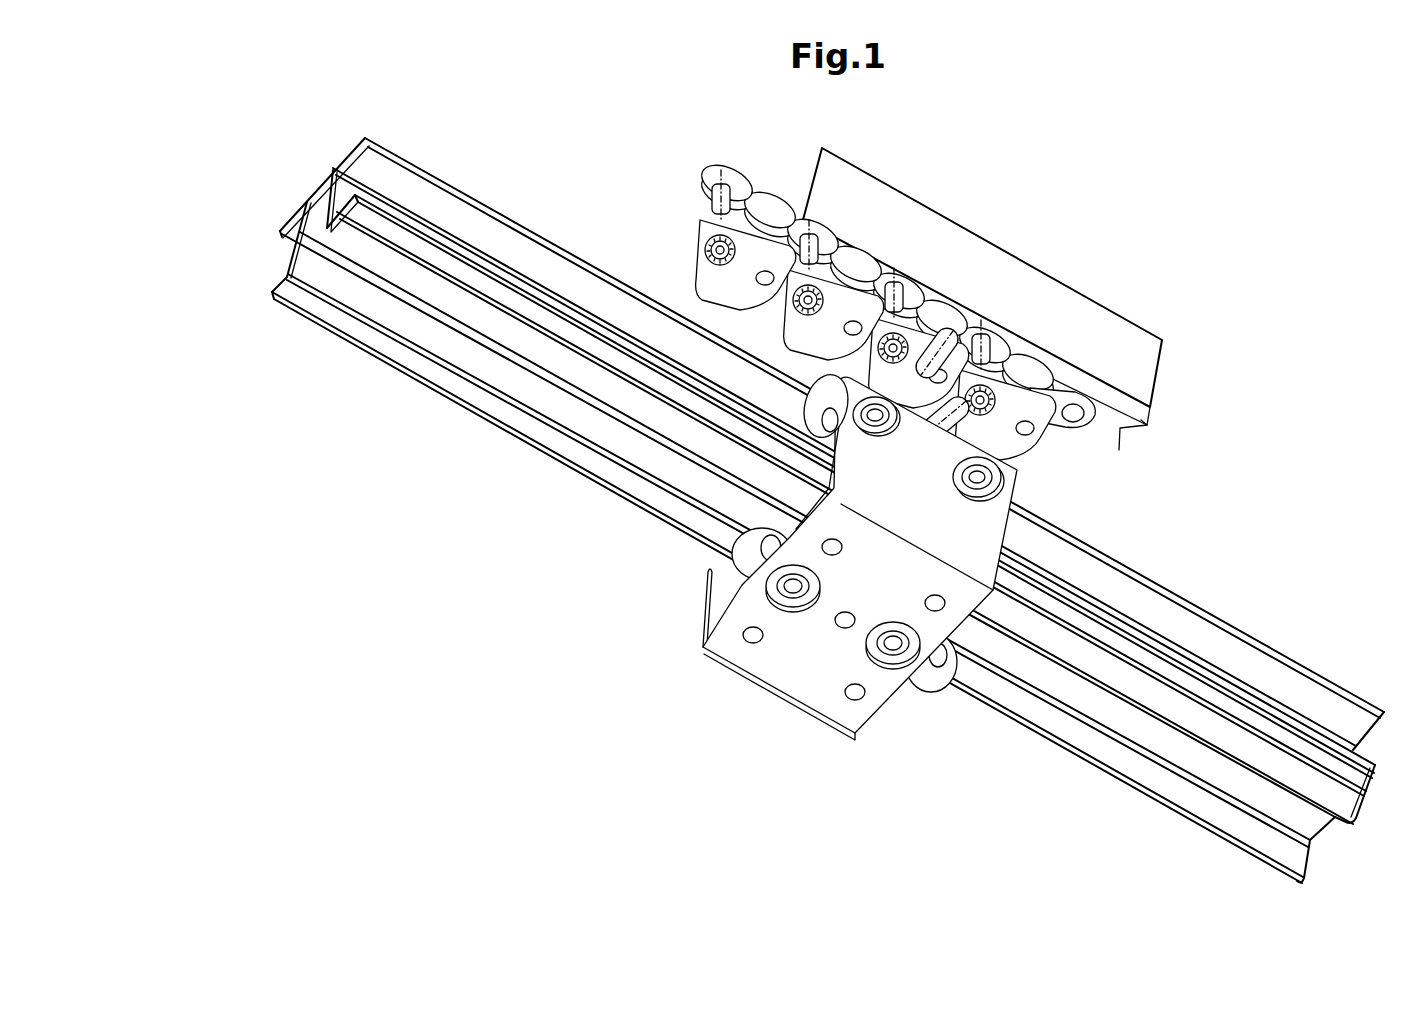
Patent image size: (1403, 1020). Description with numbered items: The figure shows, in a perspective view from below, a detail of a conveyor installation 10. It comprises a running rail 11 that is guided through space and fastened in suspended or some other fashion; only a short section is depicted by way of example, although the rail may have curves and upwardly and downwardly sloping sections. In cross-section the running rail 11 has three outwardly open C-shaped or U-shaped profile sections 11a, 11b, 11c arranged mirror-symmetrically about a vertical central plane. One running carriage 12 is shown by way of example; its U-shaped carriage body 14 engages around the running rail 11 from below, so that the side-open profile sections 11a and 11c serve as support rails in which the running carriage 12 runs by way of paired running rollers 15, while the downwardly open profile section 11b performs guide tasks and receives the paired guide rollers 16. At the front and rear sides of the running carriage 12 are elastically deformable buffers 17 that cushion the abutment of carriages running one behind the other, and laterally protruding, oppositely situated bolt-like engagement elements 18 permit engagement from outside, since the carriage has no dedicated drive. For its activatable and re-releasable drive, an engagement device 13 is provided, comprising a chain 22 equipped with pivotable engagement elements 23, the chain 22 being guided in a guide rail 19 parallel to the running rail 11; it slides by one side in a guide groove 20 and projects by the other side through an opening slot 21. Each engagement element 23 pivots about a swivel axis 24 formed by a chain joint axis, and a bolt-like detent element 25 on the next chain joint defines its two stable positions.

The conveyor installation 10 is at (501, 559).
The running rail 11 is at (363, 399).
The profile section 11a is at (300, 238).
The profile section 11b is at (498, 373).
The profile section 11c is at (362, 168).
The running carriage 12 is at (750, 700).
The engagement device 13 is at (1021, 194).
The base plate 14 is at (817, 690).
The running rollers 15 is at (810, 445).
The guide rollers 16 is at (775, 518).
The buffers 17 is at (931, 667).
The engagement elements 18 is at (1010, 498).
The guide rail 19 is at (1097, 315).
The guide groove 20 is at (795, 203).
The opening slot 21 is at (1137, 434).
The chain 22 is at (720, 173).
The engagement elements 23 is at (960, 330).
The swivel axis 24 is at (923, 305).
The detent element 25 is at (942, 360).